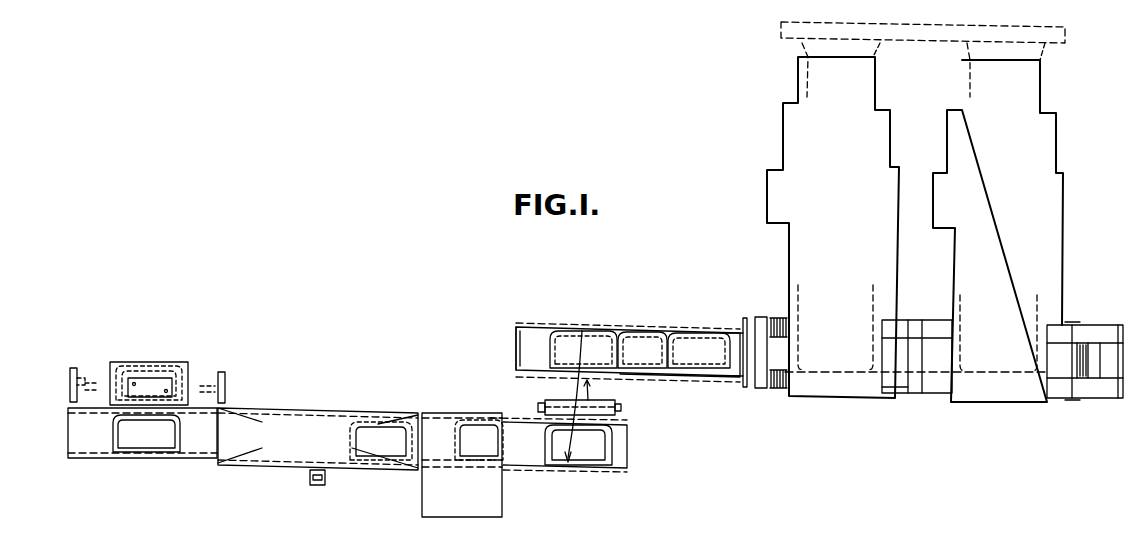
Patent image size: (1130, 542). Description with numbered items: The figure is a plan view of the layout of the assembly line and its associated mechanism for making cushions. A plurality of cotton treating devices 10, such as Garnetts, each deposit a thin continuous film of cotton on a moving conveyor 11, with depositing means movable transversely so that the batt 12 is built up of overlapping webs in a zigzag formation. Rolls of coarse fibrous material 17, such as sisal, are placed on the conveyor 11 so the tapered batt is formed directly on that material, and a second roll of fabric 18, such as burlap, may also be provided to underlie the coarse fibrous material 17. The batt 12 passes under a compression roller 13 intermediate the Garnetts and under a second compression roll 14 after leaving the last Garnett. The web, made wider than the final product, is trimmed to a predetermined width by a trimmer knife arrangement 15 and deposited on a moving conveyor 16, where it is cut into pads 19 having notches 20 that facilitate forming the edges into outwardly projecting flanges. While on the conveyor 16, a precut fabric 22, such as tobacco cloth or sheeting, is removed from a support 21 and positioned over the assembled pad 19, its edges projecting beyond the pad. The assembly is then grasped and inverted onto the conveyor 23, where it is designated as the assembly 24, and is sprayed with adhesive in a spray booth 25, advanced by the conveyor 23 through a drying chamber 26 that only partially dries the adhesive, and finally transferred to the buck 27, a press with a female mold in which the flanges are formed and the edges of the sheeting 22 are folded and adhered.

The cotton treating devices 10 is at (880, 163).
The moving conveyor 11 is at (1093, 330).
The batt 12 is at (933, 353).
The compression roller 13 is at (913, 393).
The second compression roll 14 is at (759, 388).
The trimmer knife arrangement 15 is at (743, 385).
The moving conveyor 16 is at (538, 333).
The coarse fibrous material 17 is at (1082, 362).
The second roll of fabric 18 is at (1115, 372).
The pads 19 is at (640, 342).
The notches 20 is at (670, 363).
The support 21 is at (621, 407).
The fabric 22 is at (548, 347).
The conveyor 23 is at (615, 457).
The assembly 24 is at (553, 460).
The spray booth 25 is at (423, 498).
The drying chamber 26 is at (322, 423).
The buck 27 is at (188, 370).